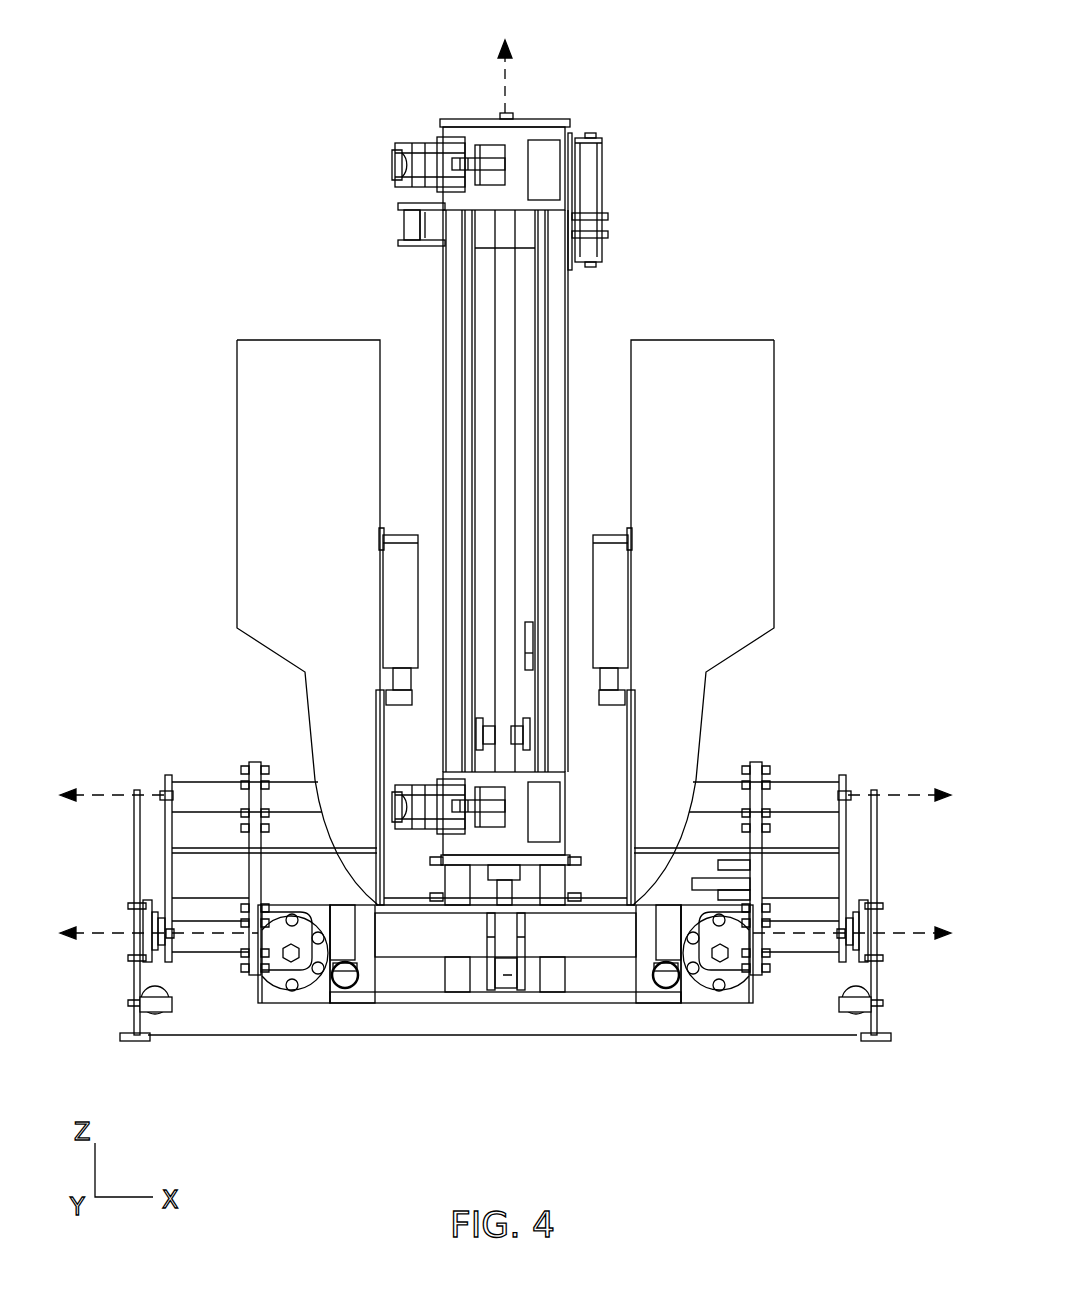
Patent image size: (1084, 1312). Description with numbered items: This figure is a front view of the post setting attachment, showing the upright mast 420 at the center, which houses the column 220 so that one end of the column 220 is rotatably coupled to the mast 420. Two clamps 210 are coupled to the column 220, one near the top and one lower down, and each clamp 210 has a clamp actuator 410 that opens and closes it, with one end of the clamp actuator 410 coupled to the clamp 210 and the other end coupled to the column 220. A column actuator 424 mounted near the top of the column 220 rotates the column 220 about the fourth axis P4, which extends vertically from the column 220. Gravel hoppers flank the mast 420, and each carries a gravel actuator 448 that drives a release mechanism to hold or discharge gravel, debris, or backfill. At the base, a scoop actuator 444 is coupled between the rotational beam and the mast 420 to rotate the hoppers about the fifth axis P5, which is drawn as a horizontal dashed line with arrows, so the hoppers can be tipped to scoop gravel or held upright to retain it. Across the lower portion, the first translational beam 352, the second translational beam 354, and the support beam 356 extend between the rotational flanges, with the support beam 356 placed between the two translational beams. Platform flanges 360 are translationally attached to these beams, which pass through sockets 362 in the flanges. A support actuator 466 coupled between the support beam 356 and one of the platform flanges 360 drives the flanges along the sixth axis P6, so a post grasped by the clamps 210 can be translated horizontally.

The clamp actuator 410 is at (393, 166).
The column actuator 424 is at (398, 228).
The clamp 210 is at (492, 168).
The mast 420 is at (557, 320).
The column 220 is at (502, 455).
The gravel actuator 448 is at (412, 560).
The platform flange 360 is at (255, 800).
The first translational beam 352 is at (188, 793).
The socket 362 is at (713, 787).
The support beam 356 is at (180, 885).
The support actuator 466 is at (692, 880).
The second translational beam 354 is at (193, 950).
The scoop actuator 444 is at (500, 990).
The fourth axis P4 is at (505, 77).
The fifth axis P5 is at (118, 938).
The sixth axis P6 is at (118, 793).